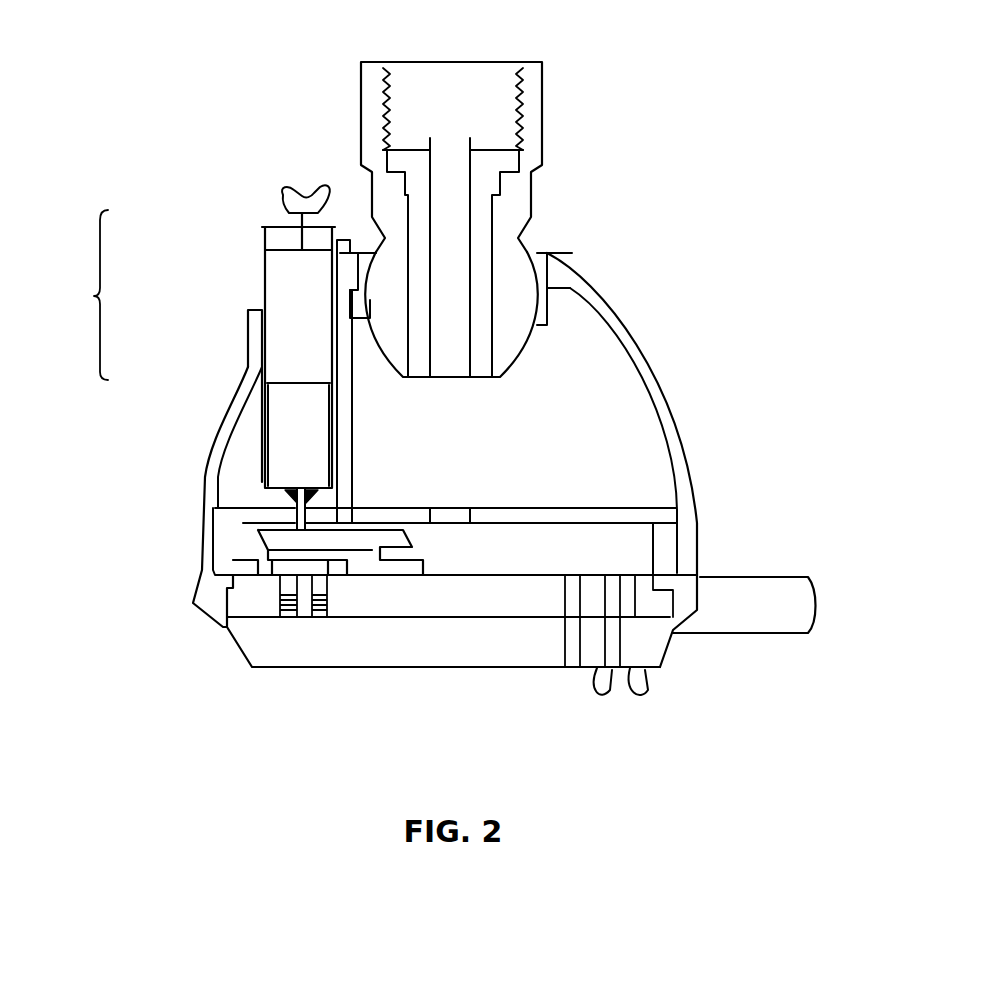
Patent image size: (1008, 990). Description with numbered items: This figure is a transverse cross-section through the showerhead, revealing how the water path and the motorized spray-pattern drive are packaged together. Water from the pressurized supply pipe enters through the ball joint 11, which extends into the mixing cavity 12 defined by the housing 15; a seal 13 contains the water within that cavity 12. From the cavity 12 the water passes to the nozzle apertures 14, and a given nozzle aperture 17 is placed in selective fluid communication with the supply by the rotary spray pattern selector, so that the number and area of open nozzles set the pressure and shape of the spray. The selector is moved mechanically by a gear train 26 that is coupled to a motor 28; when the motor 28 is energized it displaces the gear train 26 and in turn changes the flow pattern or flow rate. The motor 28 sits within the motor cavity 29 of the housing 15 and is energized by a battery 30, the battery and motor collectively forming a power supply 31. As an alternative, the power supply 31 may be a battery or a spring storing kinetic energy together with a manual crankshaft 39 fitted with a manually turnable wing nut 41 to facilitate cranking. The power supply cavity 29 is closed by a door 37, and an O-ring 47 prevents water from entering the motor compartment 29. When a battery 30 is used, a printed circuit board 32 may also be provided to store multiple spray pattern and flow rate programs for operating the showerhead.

The ball joint 11 is at (535, 153).
The mixing cavity 12 is at (620, 432).
The seal 13 is at (545, 262).
The nozzle apertures 14 is at (535, 635).
The housing 15 is at (608, 313).
The nozzle aperture 17 is at (610, 665).
The gear train 26 is at (337, 536).
The motor 28 is at (280, 425).
The motor cavity 29 is at (250, 490).
The battery 30 is at (290, 290).
The power supply 31 is at (73, 295).
The printed circuit board 32 is at (735, 610).
The door 37 is at (262, 227).
The manual crankshaft 39 is at (292, 215).
The wing nut 41 is at (290, 187).
The O-ring 47 is at (290, 500).